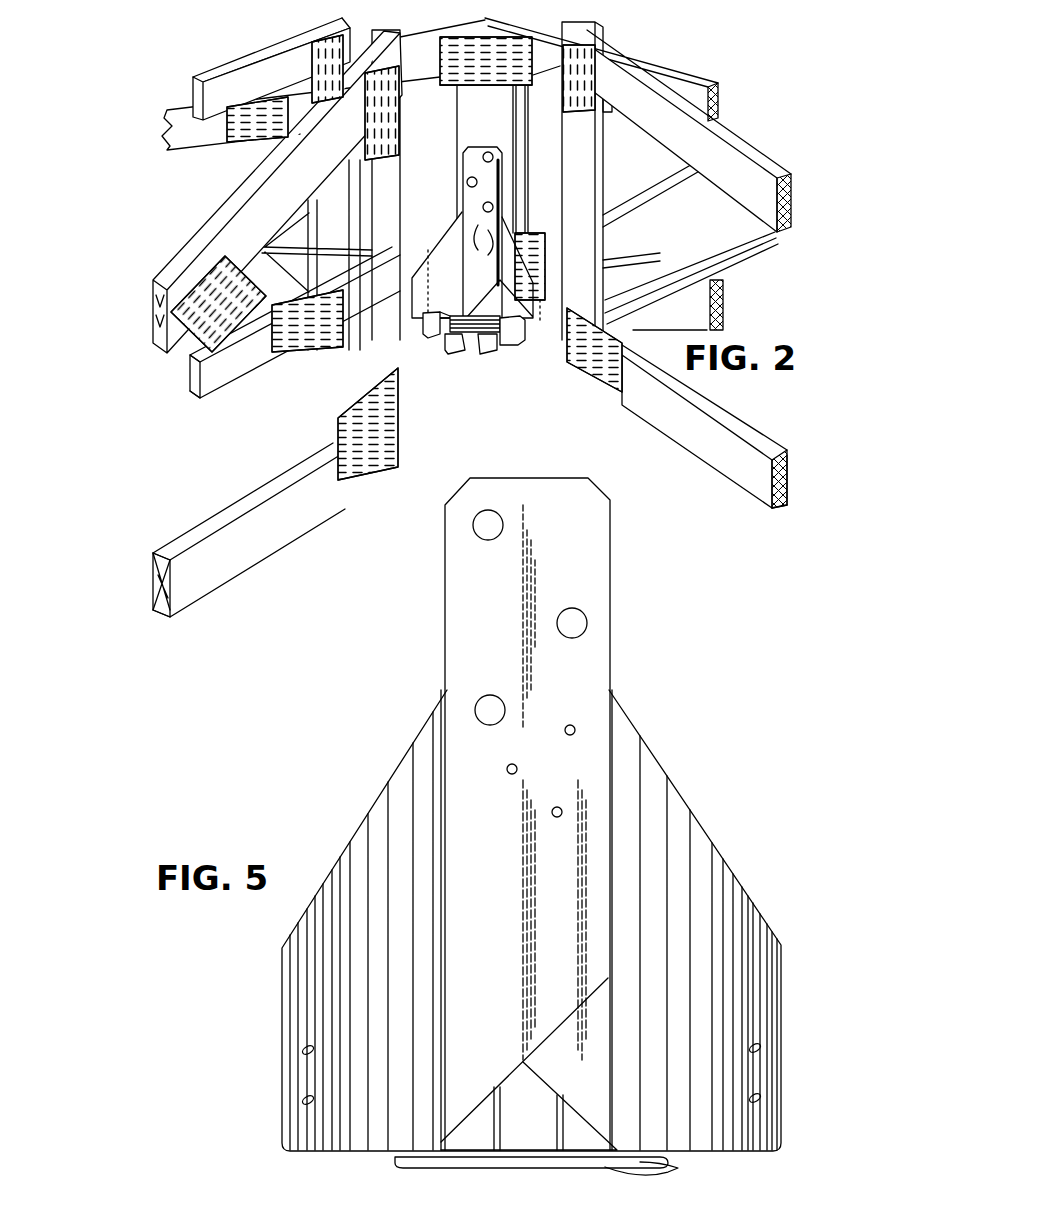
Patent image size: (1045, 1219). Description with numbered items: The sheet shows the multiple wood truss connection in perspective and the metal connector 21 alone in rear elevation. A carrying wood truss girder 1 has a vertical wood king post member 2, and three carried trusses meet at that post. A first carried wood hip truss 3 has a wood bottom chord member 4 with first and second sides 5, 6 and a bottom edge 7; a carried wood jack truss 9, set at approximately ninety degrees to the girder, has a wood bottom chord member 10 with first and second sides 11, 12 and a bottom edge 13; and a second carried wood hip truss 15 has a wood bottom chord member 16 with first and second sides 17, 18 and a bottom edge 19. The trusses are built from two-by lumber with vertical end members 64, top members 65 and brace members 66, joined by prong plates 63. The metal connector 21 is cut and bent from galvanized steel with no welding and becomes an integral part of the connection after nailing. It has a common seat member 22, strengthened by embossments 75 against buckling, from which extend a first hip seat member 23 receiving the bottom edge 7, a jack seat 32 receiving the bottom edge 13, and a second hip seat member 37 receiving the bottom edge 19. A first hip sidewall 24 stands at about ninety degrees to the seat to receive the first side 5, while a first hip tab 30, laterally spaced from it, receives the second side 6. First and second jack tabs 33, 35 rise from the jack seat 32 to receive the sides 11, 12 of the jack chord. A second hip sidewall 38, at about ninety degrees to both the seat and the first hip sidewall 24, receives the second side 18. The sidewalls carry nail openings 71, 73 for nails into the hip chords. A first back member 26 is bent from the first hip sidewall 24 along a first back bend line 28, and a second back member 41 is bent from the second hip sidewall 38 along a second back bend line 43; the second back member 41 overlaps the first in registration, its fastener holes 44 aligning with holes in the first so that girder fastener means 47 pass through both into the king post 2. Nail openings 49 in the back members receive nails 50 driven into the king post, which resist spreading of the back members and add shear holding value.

In FIG. 2, the carrying wood truss girder 1 is at (446, 26).
In FIG. 2, the vertical wood king post member 2 is at (454, 100).
In FIG. 2, the first carried wood hip truss 3 is at (274, 44).
In FIG. 2, the wood bottom chord member 4 is at (212, 405).
In FIG. 2, the first side 5 is at (188, 372).
In FIG. 2, the second side 6 is at (203, 394).
In FIG. 2, the bottom edge 7 is at (195, 398).
In FIG. 2, the carried wood jack truss 9 is at (240, 182).
In FIG. 2, the wood bottom chord member 10 is at (180, 516).
In FIG. 2, the first side 11 is at (152, 575).
In FIG. 2, the second side 12 is at (183, 582).
In FIG. 2, the bottom edge 13 is at (165, 615).
In FIG. 2, the second carried wood hip truss 15 is at (768, 150).
In FIG. 2, the wood bottom chord member 16 is at (745, 422).
In FIG. 2, the first side 17 is at (740, 479).
In FIG. 2, the second side 18 is at (788, 458).
In FIG. 2, the bottom edge 19 is at (778, 512).
In FIG. 2, the metal connector 21 is at (478, 146).
In FIG. 5, the metal connector 21 is at (658, 735).
In FIG. 2, the common seat member 22 is at (485, 338).
In FIG. 5, the common seat member 22 is at (530, 1145).
In FIG. 2, the first hip seat member 23 is at (420, 336).
In FIG. 2, the first hip sidewall 24 is at (418, 294).
In FIG. 5, the first hip sidewall 24 is at (728, 880).
In FIG. 2, the first back member 26 is at (470, 200).
In FIG. 5, the first back member 26 is at (543, 1072).
In FIG. 5, the first back bend line 28 is at (607, 1008).
In FIG. 2, the first hip tab 30 is at (428, 330).
In FIG. 2, the jack seat 32 is at (440, 360).
In FIG. 5, the first jack tab 33 is at (560, 1120).
In FIG. 5, the second jack tab 35 is at (494, 1120).
In FIG. 2, the second hip seat member 37 is at (530, 340).
In FIG. 2, the second hip sidewall 38 is at (540, 290).
In FIG. 5, the second hip sidewall 38 is at (356, 850).
In FIG. 5, the second back member 41 is at (460, 602).
In FIG. 5, the second back bend line 43 is at (437, 746).
In FIG. 5, the fastener holes 44 is at (490, 696).
In FIG. 2, the girder fastener means 47 is at (490, 152).
In FIG. 5, the nail openings 49 is at (558, 808).
In FIG. 2, the nails 50 is at (479, 250).
In FIG. 2, the prong plates 63 is at (585, 45).
In FIG. 2, the vertical end members 64 is at (402, 166).
In FIG. 2, the top members 65 is at (312, 44).
In FIG. 2, the brace members 66 is at (287, 390).
In FIG. 5, the nail openings 71 is at (762, 1098).
In FIG. 5, the nail openings 73 is at (300, 1100).
In FIG. 5, the embossments 75 is at (668, 1168).